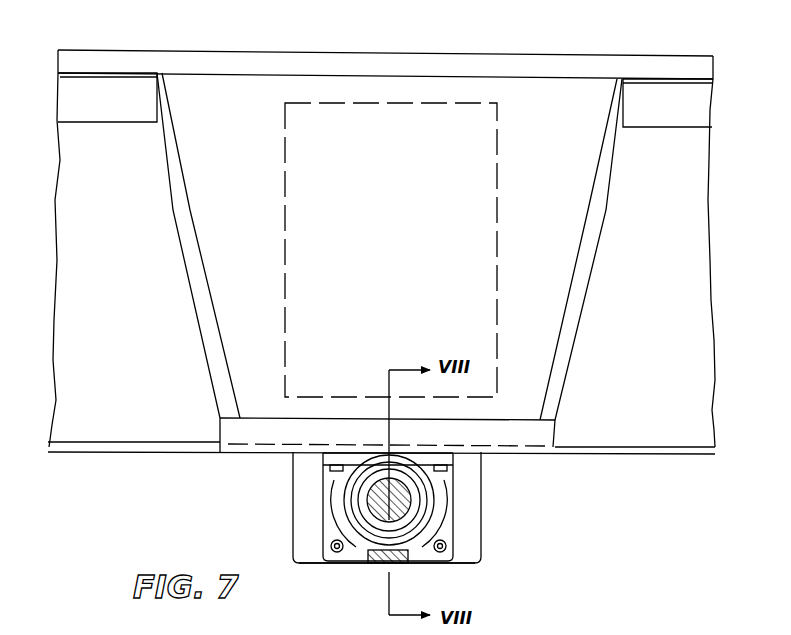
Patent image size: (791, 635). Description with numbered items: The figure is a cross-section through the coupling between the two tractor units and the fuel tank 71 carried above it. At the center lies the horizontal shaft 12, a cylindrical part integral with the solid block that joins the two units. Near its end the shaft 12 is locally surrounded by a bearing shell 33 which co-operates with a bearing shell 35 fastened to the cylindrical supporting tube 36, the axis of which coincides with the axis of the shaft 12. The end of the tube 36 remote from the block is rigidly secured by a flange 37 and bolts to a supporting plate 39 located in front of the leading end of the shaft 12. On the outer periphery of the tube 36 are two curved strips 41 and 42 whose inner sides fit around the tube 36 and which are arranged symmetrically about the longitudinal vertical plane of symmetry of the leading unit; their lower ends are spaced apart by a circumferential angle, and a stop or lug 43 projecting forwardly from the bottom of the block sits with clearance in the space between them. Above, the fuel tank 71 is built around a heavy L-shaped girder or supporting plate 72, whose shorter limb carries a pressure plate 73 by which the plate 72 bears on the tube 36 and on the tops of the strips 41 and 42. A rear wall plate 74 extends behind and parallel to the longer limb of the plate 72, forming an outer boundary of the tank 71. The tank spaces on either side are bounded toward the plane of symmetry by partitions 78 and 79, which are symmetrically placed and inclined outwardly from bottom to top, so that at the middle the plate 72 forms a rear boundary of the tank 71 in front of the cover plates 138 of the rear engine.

The horizontal shaft 12 is at (401, 478).
The bearing shell 33 is at (357, 503).
The bearing shell 35 is at (348, 512).
The cylindrical supporting tube 36 is at (432, 488).
The flange 37 is at (348, 559).
The supporting plate 39 is at (293, 490).
The curved strip 41 is at (330, 538).
The curved strip 42 is at (442, 515).
The stop or lug 43 is at (382, 565).
The fuel tank 71 is at (600, 36).
The L-shaped girder or supporting plate 72 is at (210, 94).
The pressure plate 73 is at (540, 452).
The plate 74 is at (115, 424).
The partition 78 is at (198, 272).
The partition 79 is at (587, 243).
The cover plates 138 is at (476, 200).